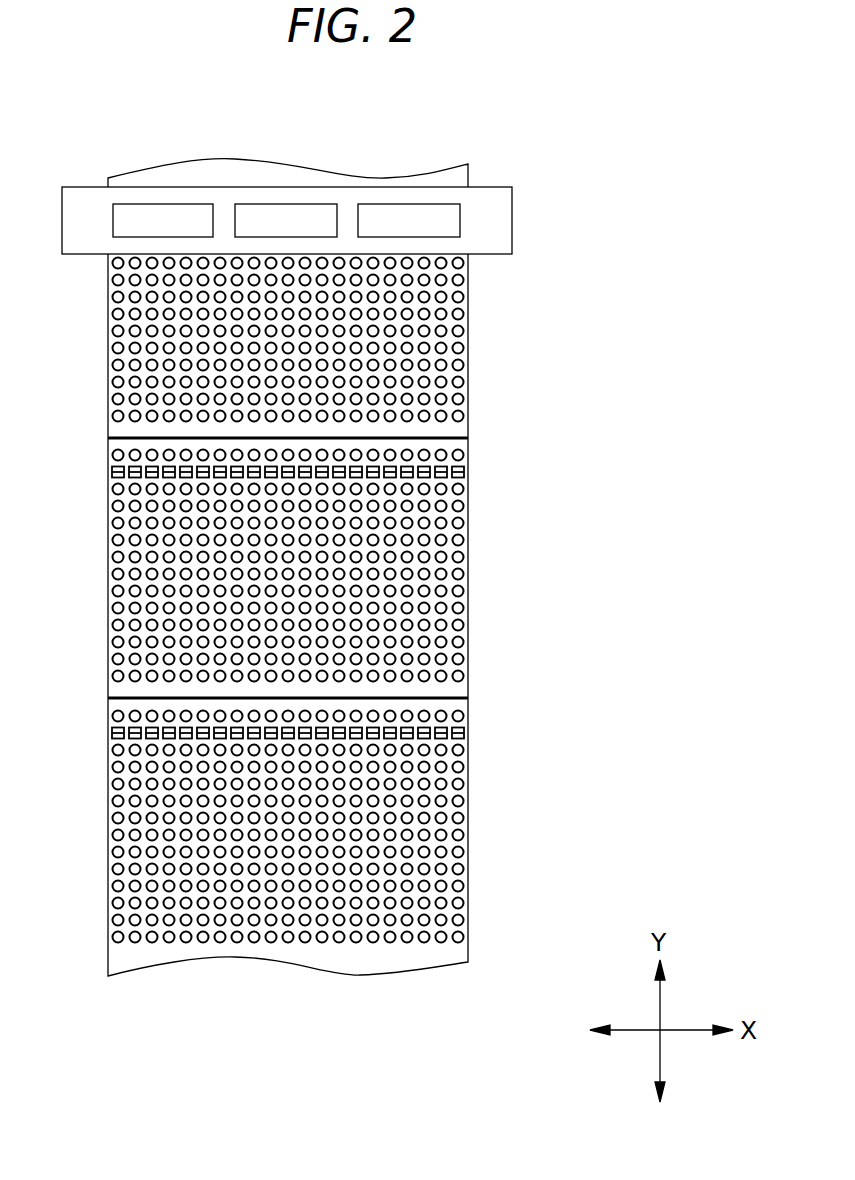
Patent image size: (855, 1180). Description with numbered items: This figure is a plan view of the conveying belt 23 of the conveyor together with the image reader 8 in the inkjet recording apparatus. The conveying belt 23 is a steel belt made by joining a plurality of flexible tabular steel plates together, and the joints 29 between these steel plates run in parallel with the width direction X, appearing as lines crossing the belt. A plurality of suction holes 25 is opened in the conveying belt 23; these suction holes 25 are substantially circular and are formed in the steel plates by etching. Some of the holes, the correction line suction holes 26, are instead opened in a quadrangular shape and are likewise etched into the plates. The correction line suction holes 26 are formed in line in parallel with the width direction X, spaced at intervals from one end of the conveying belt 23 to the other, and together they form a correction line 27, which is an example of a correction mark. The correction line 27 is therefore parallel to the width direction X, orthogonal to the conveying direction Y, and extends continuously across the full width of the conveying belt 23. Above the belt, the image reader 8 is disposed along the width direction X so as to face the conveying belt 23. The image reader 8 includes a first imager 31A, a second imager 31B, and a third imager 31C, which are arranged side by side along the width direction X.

The image reader 8 is at (512, 218).
The first imager 31A is at (163, 218).
The second imager 31B is at (287, 218).
The third imager 31C is at (410, 218).
The conveying belt 23 is at (470, 947).
The suction holes 25 is at (395, 818).
The correction line suction holes 26 is at (397, 714).
The correction line 27 is at (468, 733).
The joints 29 is at (449, 696).